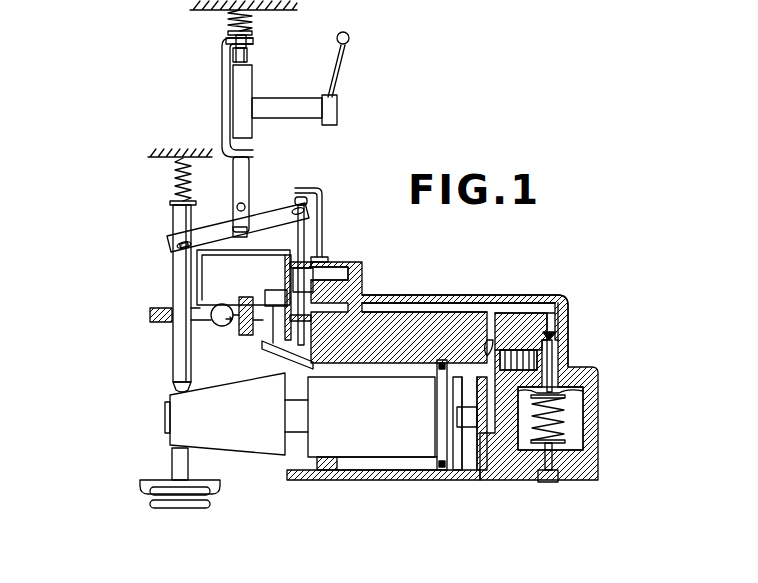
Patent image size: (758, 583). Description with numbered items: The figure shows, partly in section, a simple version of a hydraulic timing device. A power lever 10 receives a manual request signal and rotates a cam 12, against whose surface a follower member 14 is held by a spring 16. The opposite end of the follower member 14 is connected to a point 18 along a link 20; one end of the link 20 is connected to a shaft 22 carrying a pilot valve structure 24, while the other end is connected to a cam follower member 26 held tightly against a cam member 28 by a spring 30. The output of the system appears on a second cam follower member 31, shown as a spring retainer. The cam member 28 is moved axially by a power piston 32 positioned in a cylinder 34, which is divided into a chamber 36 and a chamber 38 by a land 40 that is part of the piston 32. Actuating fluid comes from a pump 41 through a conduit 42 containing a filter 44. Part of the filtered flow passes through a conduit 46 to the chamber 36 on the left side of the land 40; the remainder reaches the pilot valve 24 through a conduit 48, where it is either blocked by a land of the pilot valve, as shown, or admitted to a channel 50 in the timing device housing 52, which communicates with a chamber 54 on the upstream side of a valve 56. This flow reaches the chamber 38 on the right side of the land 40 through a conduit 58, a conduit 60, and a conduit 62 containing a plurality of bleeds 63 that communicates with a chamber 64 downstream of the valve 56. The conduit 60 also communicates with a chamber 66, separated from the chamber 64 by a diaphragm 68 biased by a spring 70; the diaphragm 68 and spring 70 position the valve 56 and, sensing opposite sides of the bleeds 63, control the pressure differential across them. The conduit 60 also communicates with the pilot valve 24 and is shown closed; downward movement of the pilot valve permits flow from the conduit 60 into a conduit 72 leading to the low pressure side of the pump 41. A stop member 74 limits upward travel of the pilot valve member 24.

The power lever 10 is at (337, 80).
The cam 12 is at (244, 91).
The follower member 14 is at (246, 53).
The spring 16 is at (236, 18).
The point 18 is at (243, 206).
The link 20 is at (207, 230).
The shaft 22 is at (300, 238).
The pilot valve structure 24 is at (337, 278).
The cam follower member 26 is at (178, 271).
The cam member 28 is at (260, 438).
The spring 30 is at (172, 189).
The second cam follower member 31 is at (172, 463).
The power piston 32 is at (360, 447).
The cylinder 34 is at (405, 468).
The chamber 36 is at (370, 467).
The chamber 38 is at (468, 468).
The land 40 is at (430, 452).
The pump 41 is at (222, 303).
The conduit 42 is at (220, 330).
The filter 44 is at (242, 336).
The conduit 46 is at (287, 352).
The conduit 48 is at (283, 288).
The channel 50 is at (382, 306).
The timing device housing 52 is at (428, 298).
The chamber 54 is at (569, 320).
The valve 56 is at (560, 331).
The conduit 58 is at (487, 374).
The conduit 60 is at (482, 327).
The conduit 62 is at (514, 350).
The bleeds 63 is at (544, 310).
The chamber 64 is at (553, 363).
The chamber 66 is at (577, 421).
The diaphragm 68 is at (590, 398).
The spring 70 is at (563, 426).
The conduit 72 is at (265, 250).
The stop member 74 is at (322, 200).